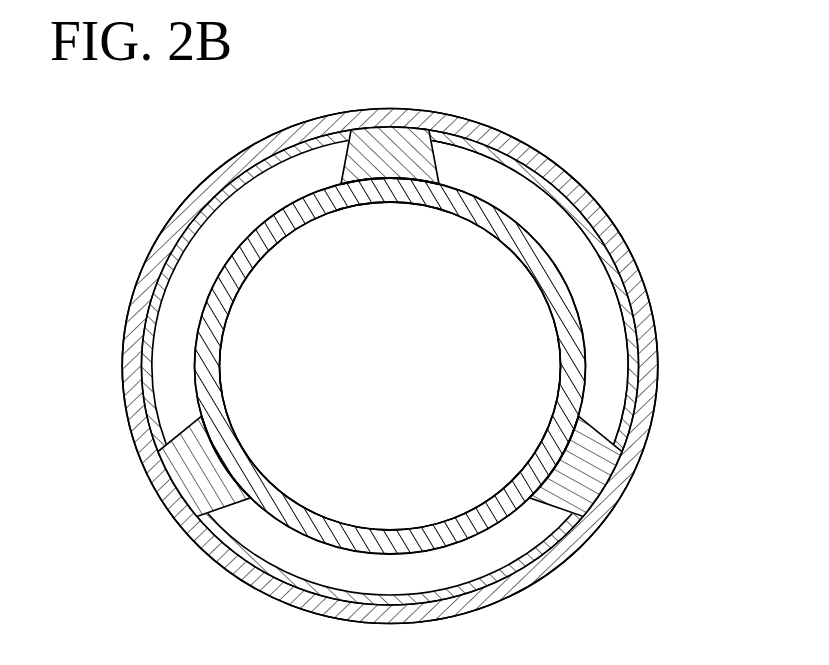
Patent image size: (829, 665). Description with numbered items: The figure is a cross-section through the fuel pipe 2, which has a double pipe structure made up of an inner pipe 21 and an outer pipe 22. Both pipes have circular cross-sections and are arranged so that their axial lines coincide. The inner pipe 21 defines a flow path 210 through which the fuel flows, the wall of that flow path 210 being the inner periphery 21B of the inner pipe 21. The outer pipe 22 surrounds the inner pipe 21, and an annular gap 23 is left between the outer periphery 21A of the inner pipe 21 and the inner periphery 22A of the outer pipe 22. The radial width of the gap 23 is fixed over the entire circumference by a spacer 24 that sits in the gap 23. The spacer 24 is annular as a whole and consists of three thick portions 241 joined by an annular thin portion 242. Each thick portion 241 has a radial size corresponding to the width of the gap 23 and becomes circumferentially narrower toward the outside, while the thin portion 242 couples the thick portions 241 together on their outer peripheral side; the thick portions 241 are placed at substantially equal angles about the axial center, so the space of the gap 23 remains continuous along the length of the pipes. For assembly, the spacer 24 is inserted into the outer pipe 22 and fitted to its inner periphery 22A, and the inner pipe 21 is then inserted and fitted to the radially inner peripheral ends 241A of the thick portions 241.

The fuel pipe 2 is at (548, 107).
The inner pipe 21 is at (263, 222).
The outer periphery of the inner pipe 21A is at (204, 281).
The inner periphery of the inner pipe 21B is at (222, 373).
The flow path 210 is at (411, 372).
The outer pipe 22 is at (481, 117).
The inner periphery of the outer pipe 22A is at (293, 168).
The annular gap 23 is at (484, 186).
The spacer 24 is at (397, 316).
The thick portion 241 is at (372, 112).
The inner peripheral end of the thick portion 241A is at (380, 184).
The thin portion 242 is at (610, 233).